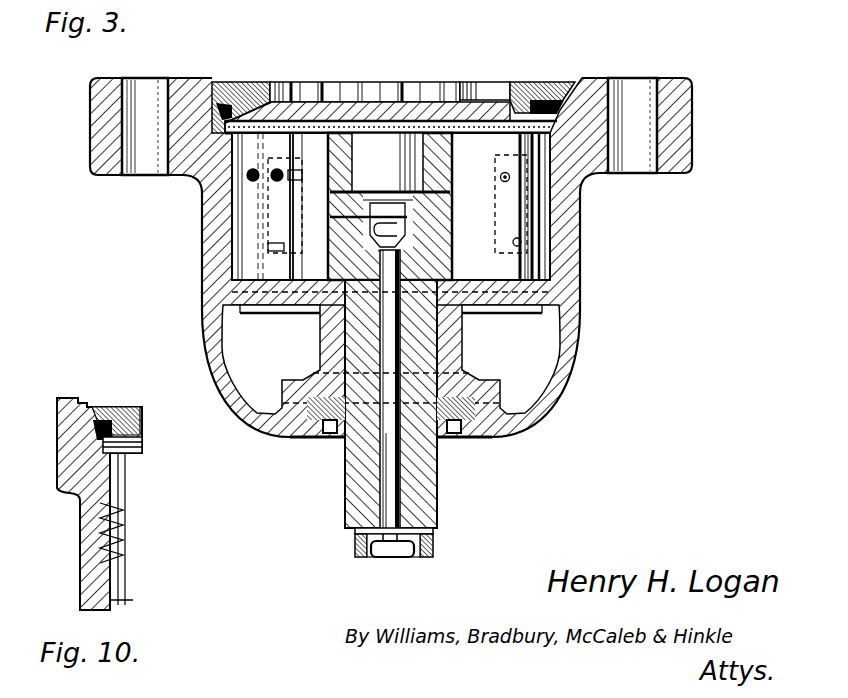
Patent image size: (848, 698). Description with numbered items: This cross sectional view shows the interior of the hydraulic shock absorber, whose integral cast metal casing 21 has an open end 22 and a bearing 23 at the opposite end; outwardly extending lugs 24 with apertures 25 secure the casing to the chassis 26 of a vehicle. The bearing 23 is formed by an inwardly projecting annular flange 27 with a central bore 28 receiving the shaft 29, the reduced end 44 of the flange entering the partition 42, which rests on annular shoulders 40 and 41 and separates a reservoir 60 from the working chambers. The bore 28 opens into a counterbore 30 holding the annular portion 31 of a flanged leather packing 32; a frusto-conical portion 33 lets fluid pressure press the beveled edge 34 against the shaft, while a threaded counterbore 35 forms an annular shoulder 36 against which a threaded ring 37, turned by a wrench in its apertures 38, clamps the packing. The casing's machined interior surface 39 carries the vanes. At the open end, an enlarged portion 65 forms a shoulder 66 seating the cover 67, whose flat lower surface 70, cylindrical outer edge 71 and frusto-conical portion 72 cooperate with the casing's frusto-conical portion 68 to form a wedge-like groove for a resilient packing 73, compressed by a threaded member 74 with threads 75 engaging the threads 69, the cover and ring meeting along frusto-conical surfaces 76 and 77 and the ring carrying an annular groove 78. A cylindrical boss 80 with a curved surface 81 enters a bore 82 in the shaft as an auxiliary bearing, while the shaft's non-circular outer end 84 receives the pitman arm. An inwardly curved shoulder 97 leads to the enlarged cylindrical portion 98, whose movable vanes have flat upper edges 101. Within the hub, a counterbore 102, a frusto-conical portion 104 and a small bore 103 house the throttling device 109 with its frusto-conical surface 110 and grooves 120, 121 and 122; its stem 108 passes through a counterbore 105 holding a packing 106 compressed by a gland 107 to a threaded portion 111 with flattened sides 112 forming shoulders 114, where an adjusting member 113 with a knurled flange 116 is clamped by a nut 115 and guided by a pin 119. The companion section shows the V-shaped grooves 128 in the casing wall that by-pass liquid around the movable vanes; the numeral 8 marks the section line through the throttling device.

In FIG. 3, the section line 8 is at (319, 202).
In FIG. 3, the casing 21 is at (580, 200).
In FIG. 10, the casing 21 is at (80, 538).
In FIG. 3, the open end 22 is at (563, 130).
In FIG. 3, the bearing 23 is at (270, 432).
In FIG. 3, the lugs 24 is at (680, 97).
In FIG. 3, the apertures 25 is at (650, 138).
In FIG. 3, the chassis 26 is at (383, 128).
In FIG. 3, the annular flange 27 is at (253, 380).
In FIG. 3, the bore 28 is at (565, 300).
In FIG. 3, the shaft 29 is at (440, 437).
In FIG. 3, the counterbore 30 is at (580, 367).
In FIG. 3, the annular portion 31 is at (480, 385).
In FIG. 3, the flanged leather packing 32 is at (507, 392).
In FIG. 3, the frusto-conical portion 33 is at (477, 363).
In FIG. 3, the beveled edge 34 is at (477, 340).
In FIG. 3, the threaded counterbore 35 is at (490, 433).
In FIG. 3, the annular shoulder 36 is at (533, 423).
In FIG. 3, the threaded ring 37 is at (315, 437).
In FIG. 3, the apertures 38 is at (332, 437).
In FIG. 3, the interior surface 39 is at (217, 243).
In FIG. 10, the interior surface 39 is at (100, 577).
In FIG. 3, the annular shoulder 40 is at (230, 298).
In FIG. 3, the annular shoulder 41 is at (222, 352).
In FIG. 3, the partition 42 is at (290, 315).
In FIG. 3, the reduced end 44 is at (580, 253).
In FIG. 3, the reservoir 60 is at (250, 390).
In FIG. 3, the enlarged portion 65 is at (213, 137).
In FIG. 3, the annular shoulder 66 is at (192, 186).
In FIG. 3, the cover 67 is at (362, 112).
In FIG. 10, the cover 67 is at (142, 453).
In FIG. 3, the frusto-conical portion 68 is at (220, 110).
In FIG. 3, the threads 69 is at (208, 88).
In FIG. 3, the flat lower surface 70 is at (303, 133).
In FIG. 3, the cylindrical outer edge 71 is at (323, 133).
In FIG. 3, the frusto-conical portion 72 is at (232, 112).
In FIG. 3, the packing 73 is at (556, 95).
In FIG. 10, the packing 73 is at (100, 437).
In FIG. 3, the threaded member 74 is at (525, 95).
In FIG. 10, the threaded member 74 is at (120, 407).
In FIG. 3, the threads 75 is at (600, 76).
In FIG. 3, the frusto-conical surface 76 is at (516, 88).
In FIG. 3, the frusto-conical surface 77 is at (498, 90).
In FIG. 3, the annular groove 78 is at (546, 95).
In FIG. 3, the cylindrical boss 80 is at (423, 133).
In FIG. 3, the curved surface 81 is at (358, 133).
In FIG. 3, the bore 82 is at (393, 128).
In FIG. 3, the non-circular outer end 84 is at (440, 484).
In FIG. 3, the inwardly curved shoulder 97 is at (450, 277).
In FIG. 3, the enlarged cylindrical portion 98 is at (552, 195).
In FIG. 3, the upper edges 101 is at (466, 165).
In FIG. 3, the counterbore 102 is at (397, 183).
In FIG. 3, the small bore 103 is at (320, 345).
In FIG. 3, the frusto-conical portion 104 is at (320, 330).
In FIG. 3, the counterbore 105 is at (353, 490).
In FIG. 3, the packing 106 is at (440, 497).
In FIG. 3, the gland 107 is at (353, 528).
In FIG. 3, the stem 108 is at (348, 470).
In FIG. 3, the throttling device 109 is at (447, 207).
In FIG. 3, the frusto-conical surface 110 is at (465, 232).
In FIG. 3, the threaded portion 111 is at (395, 563).
In FIG. 3, the flattened sides 112 is at (430, 540).
In FIG. 3, the adjusting member 113 is at (357, 542).
In FIG. 3, the shoulders 114 is at (430, 537).
In FIG. 3, the nut 115 is at (413, 557).
In FIG. 3, the flange 116 is at (360, 557).
In FIG. 3, the pin 119 is at (440, 523).
In FIG. 3, the groove 120 is at (395, 163).
In FIG. 3, the groove 121 is at (362, 190).
In FIG. 3, the groove 122 is at (460, 191).
In FIG. 10, the grooves 128 is at (110, 513).